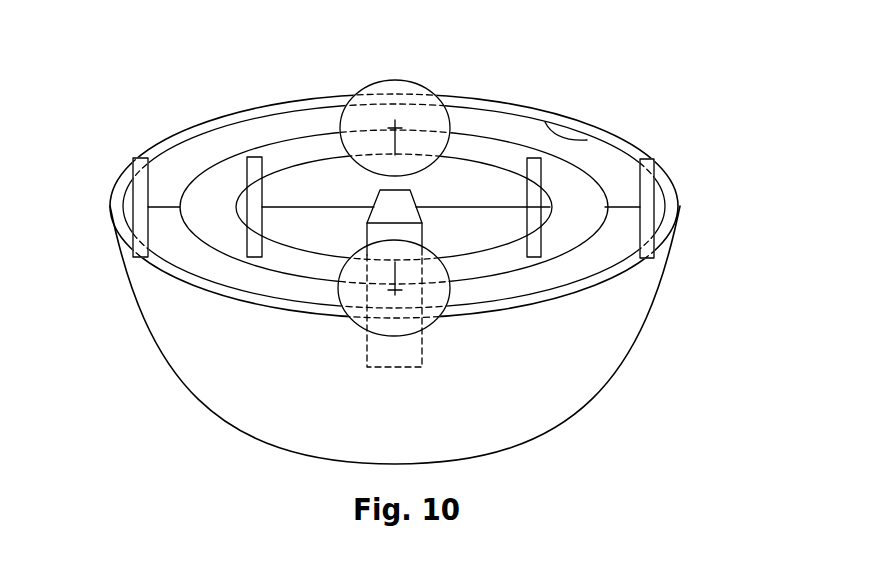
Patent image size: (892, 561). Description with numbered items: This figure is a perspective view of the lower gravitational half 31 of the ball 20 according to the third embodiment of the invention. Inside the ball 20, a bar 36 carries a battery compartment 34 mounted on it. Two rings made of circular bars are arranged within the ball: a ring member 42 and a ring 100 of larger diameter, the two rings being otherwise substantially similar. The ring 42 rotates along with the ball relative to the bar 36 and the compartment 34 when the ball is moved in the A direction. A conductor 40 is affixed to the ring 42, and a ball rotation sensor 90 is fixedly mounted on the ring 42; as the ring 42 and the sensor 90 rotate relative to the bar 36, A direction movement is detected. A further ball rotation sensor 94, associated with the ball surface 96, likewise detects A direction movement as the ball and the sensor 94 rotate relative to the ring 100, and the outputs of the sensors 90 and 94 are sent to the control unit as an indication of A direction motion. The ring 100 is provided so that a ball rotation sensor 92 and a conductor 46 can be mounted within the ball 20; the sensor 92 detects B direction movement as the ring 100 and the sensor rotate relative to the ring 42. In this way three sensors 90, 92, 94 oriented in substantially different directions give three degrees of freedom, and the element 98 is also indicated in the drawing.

The ball 20 is at (113, 402).
The lower gravitational half 31 is at (633, 443).
The battery compartment 34 is at (398, 352).
The bar 36 is at (470, 207).
The conductor 40 is at (533, 173).
The ring member 42 is at (483, 250).
The conductor 46 is at (333, 295).
The ball rotation sensor 90 is at (255, 167).
The ball rotation sensor 92 is at (392, 86).
The ball rotation sensor 94 is at (140, 190).
The ball surface 96 is at (587, 140).
The support block 98 is at (645, 187).
The ring 100 is at (557, 258).